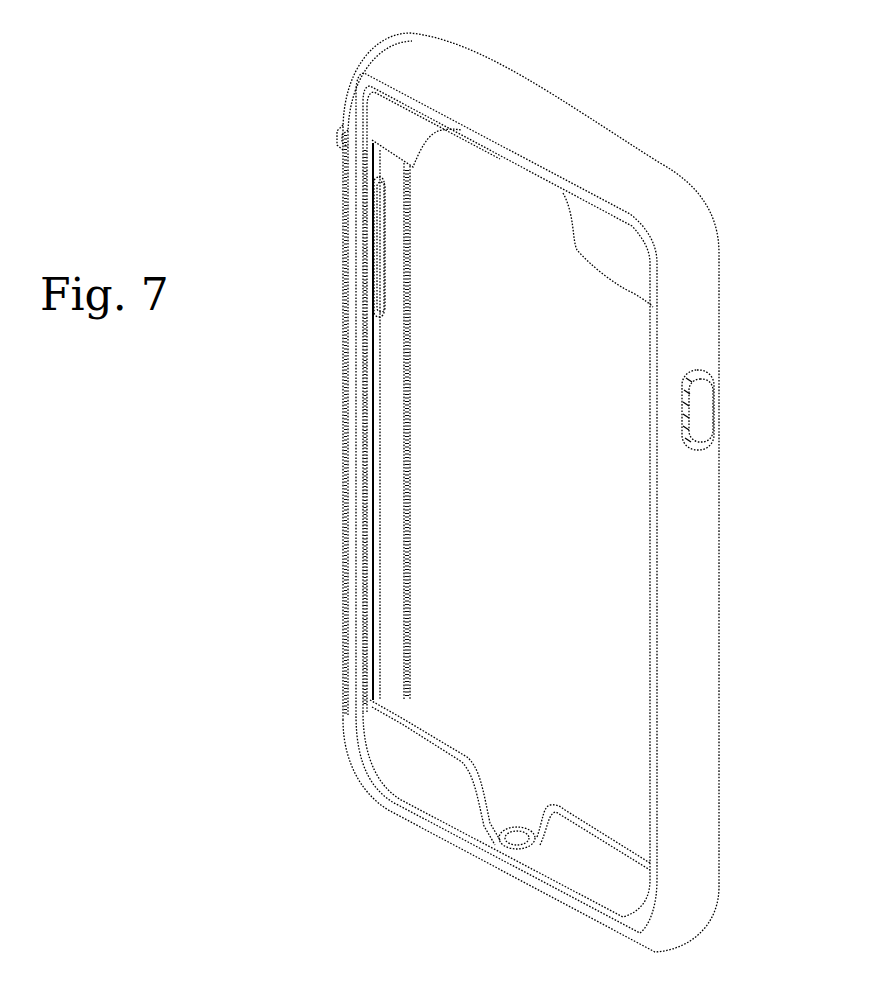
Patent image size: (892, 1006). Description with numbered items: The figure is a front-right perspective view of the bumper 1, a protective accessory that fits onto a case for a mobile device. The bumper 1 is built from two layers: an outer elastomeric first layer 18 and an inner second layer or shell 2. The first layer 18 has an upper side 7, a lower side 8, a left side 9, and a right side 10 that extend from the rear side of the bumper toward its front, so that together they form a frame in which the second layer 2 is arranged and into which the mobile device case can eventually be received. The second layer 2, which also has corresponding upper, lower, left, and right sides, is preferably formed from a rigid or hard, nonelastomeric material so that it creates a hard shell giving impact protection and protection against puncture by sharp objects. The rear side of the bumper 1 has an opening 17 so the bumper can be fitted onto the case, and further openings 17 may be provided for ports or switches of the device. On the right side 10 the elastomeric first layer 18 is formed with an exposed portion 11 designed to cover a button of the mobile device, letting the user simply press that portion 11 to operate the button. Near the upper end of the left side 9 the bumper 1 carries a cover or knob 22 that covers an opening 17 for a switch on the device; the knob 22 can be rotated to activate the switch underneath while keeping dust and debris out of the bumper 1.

The bumper 1 is at (286, 444).
The second layer or shell 2 is at (417, 151).
The upper side 7 is at (562, 106).
The lower side 8 is at (520, 890).
The left side 9 is at (343, 368).
The right side 10 is at (690, 560).
The portion covering buttons 11 is at (713, 410).
The opening 17 is at (520, 180).
The first layer 18 is at (412, 383).
The knob 22 is at (343, 128).